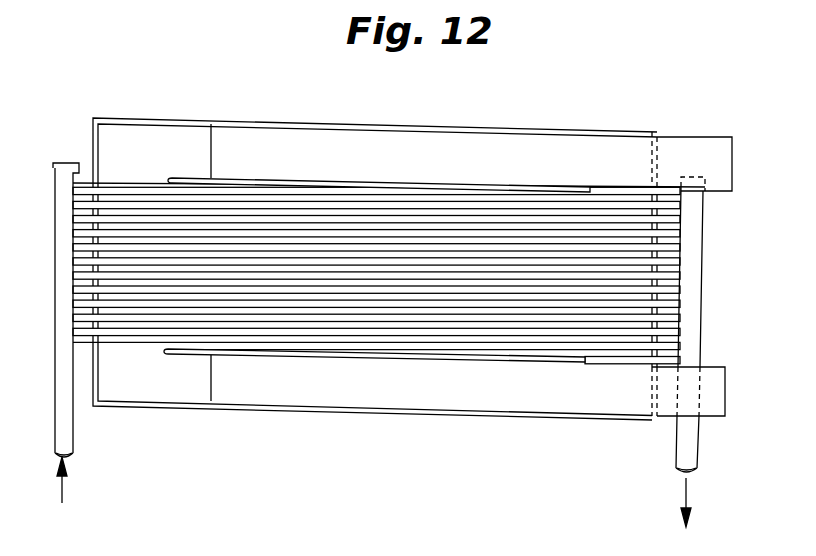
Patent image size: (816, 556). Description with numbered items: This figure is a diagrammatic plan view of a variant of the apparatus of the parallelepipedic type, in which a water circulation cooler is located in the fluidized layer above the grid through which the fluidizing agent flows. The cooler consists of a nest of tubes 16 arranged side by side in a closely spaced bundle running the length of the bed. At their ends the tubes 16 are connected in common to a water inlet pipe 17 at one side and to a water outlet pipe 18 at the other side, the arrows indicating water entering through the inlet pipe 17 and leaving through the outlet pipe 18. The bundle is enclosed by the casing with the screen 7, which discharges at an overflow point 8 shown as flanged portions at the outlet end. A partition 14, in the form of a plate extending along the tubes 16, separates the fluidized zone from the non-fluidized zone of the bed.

The screen 7 is at (578, 148).
The overflow point 8 is at (717, 146).
The vertical internal partition 14 is at (246, 178).
The nest of tubes 16 is at (363, 218).
The water inlet pipe 17 is at (61, 365).
The water outlet pipe 18 is at (695, 332).